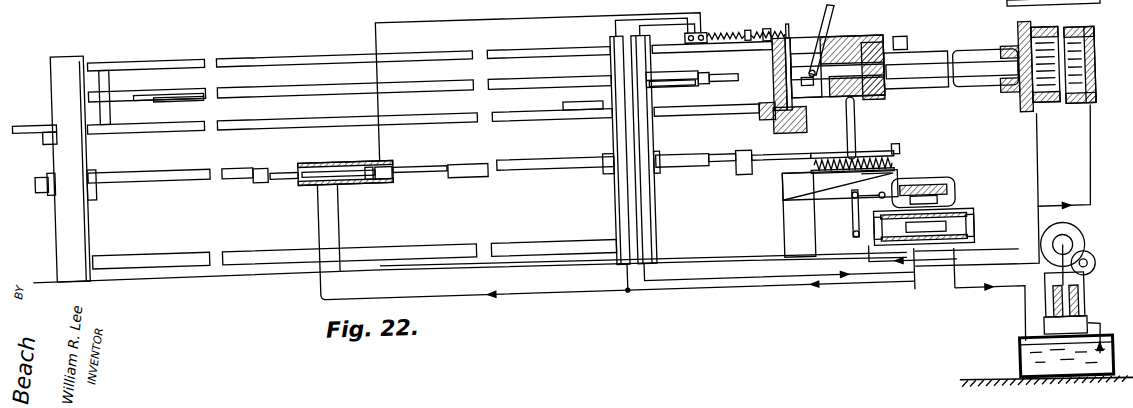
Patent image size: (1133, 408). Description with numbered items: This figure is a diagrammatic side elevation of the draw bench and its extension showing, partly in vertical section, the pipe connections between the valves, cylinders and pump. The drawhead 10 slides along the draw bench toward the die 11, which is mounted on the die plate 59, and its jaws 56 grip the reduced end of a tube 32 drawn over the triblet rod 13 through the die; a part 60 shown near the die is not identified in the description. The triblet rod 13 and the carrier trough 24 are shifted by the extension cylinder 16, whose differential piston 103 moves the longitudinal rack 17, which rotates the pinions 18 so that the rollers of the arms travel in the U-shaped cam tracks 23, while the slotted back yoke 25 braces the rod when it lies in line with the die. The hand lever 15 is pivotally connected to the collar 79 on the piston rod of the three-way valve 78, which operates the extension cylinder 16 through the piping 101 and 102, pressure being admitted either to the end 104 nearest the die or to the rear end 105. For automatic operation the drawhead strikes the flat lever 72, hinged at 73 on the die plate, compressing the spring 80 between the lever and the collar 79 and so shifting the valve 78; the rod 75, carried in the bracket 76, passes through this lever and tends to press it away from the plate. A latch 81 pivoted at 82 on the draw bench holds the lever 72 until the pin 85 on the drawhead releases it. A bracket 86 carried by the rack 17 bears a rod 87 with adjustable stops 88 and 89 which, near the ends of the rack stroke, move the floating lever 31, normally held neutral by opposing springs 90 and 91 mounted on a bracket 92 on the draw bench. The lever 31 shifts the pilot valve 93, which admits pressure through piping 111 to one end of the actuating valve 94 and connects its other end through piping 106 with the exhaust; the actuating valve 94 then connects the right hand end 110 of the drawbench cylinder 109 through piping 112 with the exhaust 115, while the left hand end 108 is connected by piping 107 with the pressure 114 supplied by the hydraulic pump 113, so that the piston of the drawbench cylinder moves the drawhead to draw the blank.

The drawhead 10 is at (884, 103).
The die 11 is at (777, 86).
The triblet rod 13 is at (132, 81).
The lever 15 is at (754, 35).
The hydraulic cylinder 16 is at (386, 172).
The rack 17 is at (193, 167).
The pinions 18 is at (95, 176).
The cam tracks 23 is at (22, 108).
The carrier trough 24 is at (196, 88).
The back yoke 25 is at (113, 102).
The lever 31 is at (857, 128).
The tubes 32 is at (668, 76).
The jaws 56 is at (814, 93).
The die plate 59 is at (777, 104).
The rod 60 is at (728, 78).
The flat lever 72 is at (786, 44).
The hinge 73 is at (809, 120).
The rod 75 is at (794, 40).
The bracket 76 is at (775, 35).
The valve 78 is at (690, 40).
The collar 79 is at (735, 37).
The spring 80 is at (770, 37).
The latch 81 is at (885, 52).
The pivot 82 is at (910, 46).
The pin 85 is at (850, 46).
The bracket 86 is at (743, 179).
The rod 87 is at (768, 165).
The stop 88 is at (850, 166).
The stop 89 is at (899, 156).
The spring 90 is at (835, 160).
The spring 91 is at (875, 163).
The bracket 92 is at (826, 198).
The pilot valve 93 is at (940, 190).
The actuating valve 94 is at (960, 220).
The piping 101 is at (494, 16).
The piping 102 is at (510, 293).
The piston 103 is at (370, 176).
The cylinder end 104 is at (394, 158).
The rear end 105 is at (306, 176).
The piping 106 is at (893, 186).
The piping 107 is at (1037, 160).
The left hand end 108 is at (1023, 110).
The drawbench cylinder 109 is at (1099, 56).
The right hand end 110 is at (1088, 98).
The piping 111 is at (950, 210).
The piping 112 is at (1090, 190).
The hydraulic pump 113 is at (1083, 322).
The pressure 114 is at (1003, 300).
The exhaust 115 is at (948, 300).